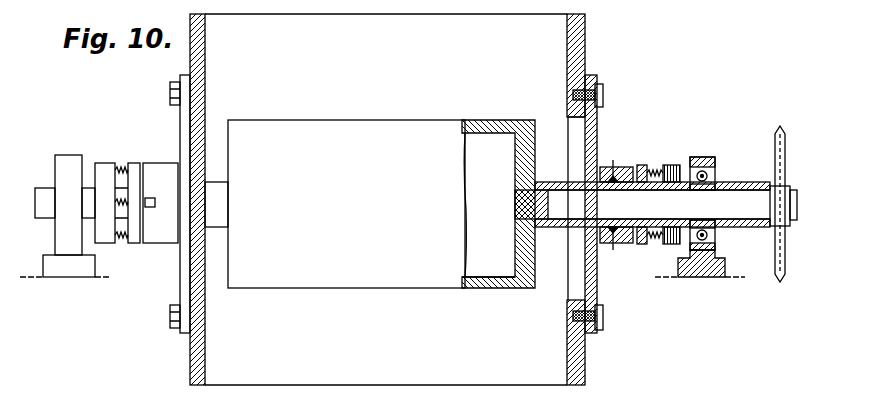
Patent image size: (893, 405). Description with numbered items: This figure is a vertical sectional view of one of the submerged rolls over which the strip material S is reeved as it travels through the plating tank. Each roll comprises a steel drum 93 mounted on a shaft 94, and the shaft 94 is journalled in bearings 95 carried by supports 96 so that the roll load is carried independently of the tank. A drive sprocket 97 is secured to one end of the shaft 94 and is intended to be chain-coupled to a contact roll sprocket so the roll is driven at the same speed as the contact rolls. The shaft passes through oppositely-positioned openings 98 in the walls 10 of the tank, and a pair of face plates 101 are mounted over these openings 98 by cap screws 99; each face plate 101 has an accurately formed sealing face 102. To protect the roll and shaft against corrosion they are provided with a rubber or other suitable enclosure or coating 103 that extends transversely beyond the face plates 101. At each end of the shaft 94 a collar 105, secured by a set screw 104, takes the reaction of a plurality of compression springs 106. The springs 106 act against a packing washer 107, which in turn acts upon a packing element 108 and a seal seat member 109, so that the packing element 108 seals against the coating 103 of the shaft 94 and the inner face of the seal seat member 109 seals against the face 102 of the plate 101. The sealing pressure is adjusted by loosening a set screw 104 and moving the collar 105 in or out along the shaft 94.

The walls 10 is at (205, 75).
The steel drum 93 is at (518, 259).
The shaft 94 is at (45, 218).
The bearings 95 is at (63, 158).
The supports 96 is at (68, 278).
The drive sprocket 97 is at (778, 275).
The openings 98 is at (573, 117).
The cap screws 99 is at (170, 96).
The face plates 101 is at (180, 124).
The sealing face 102 is at (600, 166).
The enclosure or coating 103 is at (476, 289).
The set screw 104 is at (676, 165).
The collar 105 is at (105, 163).
The compression springs 106 is at (122, 243).
The packing washer 107 is at (140, 150).
The packing element 108 is at (613, 197).
The seal seat member 109 is at (155, 243).
The strip material S is at (360, 289).